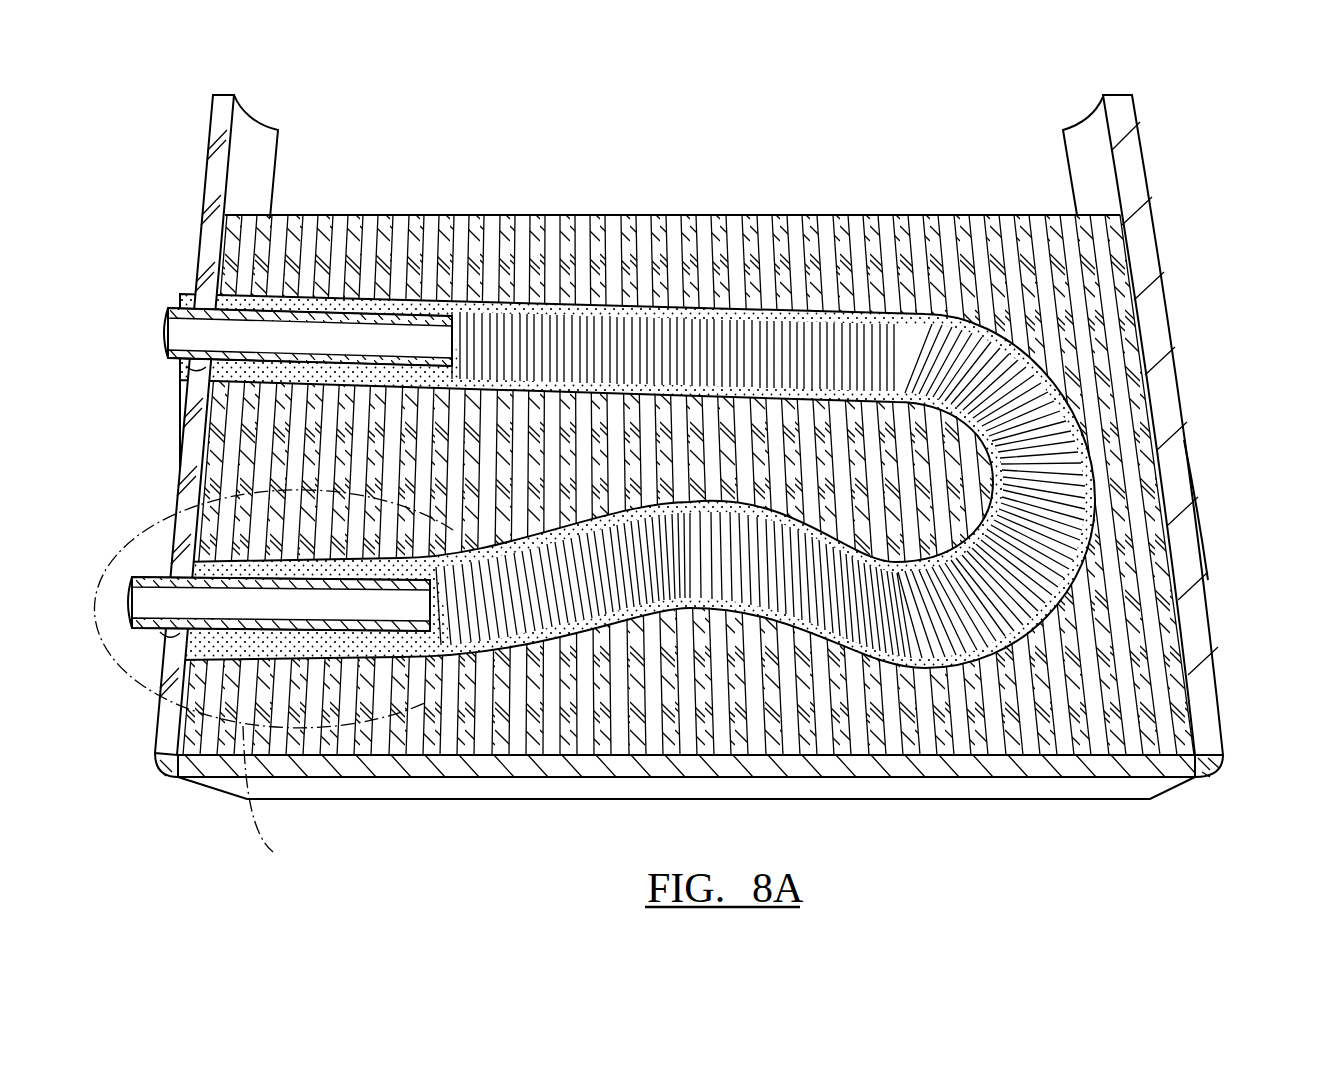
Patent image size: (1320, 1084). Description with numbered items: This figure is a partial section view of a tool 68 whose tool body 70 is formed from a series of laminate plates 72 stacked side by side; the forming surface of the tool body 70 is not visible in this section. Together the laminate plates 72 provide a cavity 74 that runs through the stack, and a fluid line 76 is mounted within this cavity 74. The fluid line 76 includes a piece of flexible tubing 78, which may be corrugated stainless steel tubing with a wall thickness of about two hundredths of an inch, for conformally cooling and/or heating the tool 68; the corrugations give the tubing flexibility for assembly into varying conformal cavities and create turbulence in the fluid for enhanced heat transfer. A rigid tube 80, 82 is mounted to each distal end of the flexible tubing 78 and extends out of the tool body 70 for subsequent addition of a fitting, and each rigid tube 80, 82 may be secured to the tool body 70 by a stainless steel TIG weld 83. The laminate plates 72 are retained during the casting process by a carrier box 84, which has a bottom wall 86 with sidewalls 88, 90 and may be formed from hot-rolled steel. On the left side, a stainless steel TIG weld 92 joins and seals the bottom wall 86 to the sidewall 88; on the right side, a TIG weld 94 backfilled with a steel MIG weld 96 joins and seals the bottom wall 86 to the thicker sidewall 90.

The tool 68 is at (648, 123).
The tool body 70 is at (381, 214).
The laminate plates 72 is at (433, 222).
The cavity 74 is at (462, 300).
The flexible tubing 78 is at (764, 310).
The fluid line 76 is at (184, 304).
The rigid tube 80 is at (172, 363).
The TIG weld 83 is at (192, 365).
The sidewall 88 is at (183, 482).
The rigid tube 82 is at (150, 575).
The carrier box 84 is at (1170, 341).
The sidewall 90 is at (1195, 493).
The bottom wall 86 is at (808, 796).
The TIG weld 92 is at (167, 770).
The TIG weld 94 is at (1226, 752).
The MIG weld 96 is at (1228, 770).